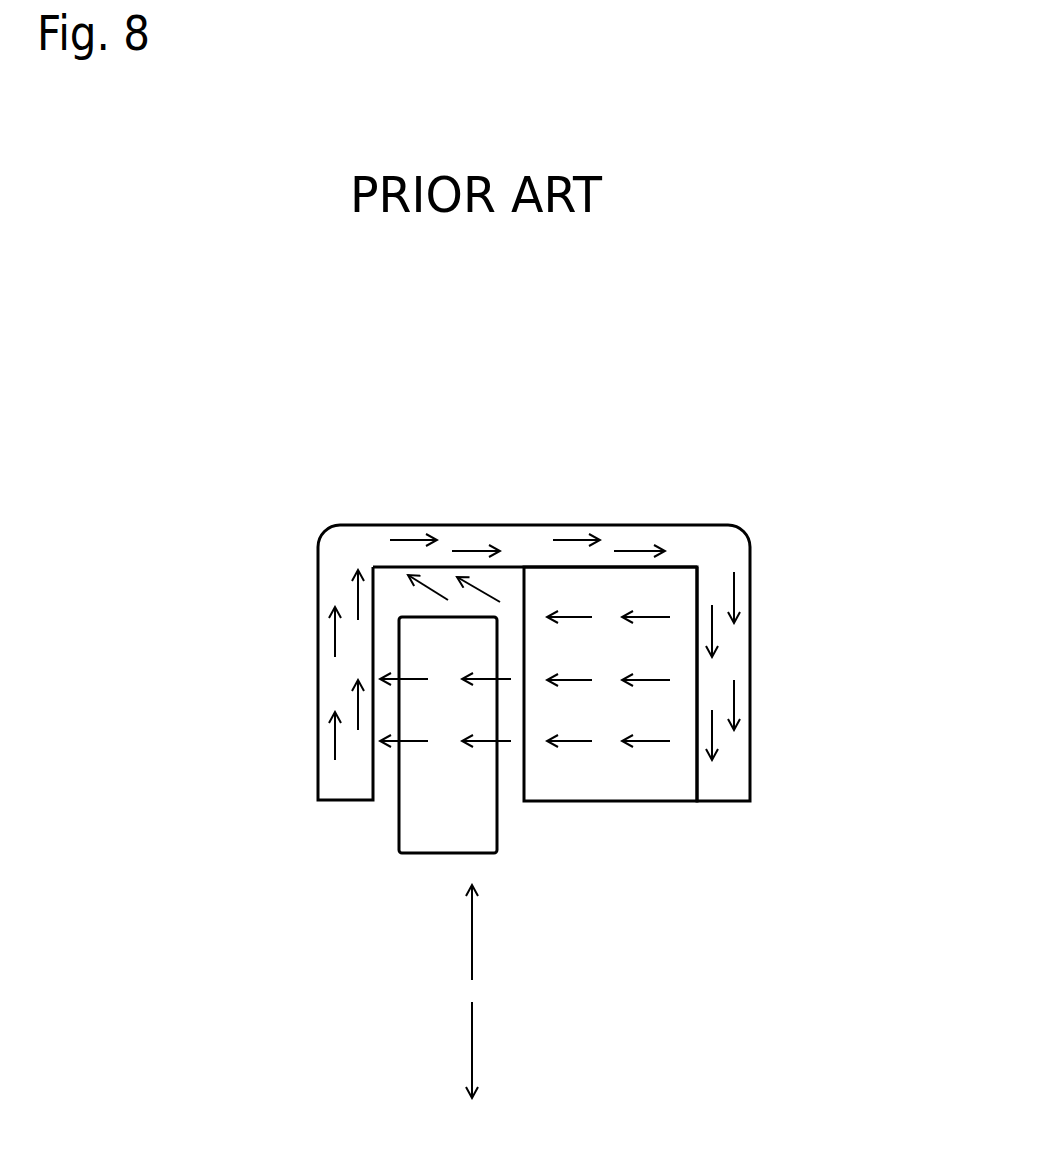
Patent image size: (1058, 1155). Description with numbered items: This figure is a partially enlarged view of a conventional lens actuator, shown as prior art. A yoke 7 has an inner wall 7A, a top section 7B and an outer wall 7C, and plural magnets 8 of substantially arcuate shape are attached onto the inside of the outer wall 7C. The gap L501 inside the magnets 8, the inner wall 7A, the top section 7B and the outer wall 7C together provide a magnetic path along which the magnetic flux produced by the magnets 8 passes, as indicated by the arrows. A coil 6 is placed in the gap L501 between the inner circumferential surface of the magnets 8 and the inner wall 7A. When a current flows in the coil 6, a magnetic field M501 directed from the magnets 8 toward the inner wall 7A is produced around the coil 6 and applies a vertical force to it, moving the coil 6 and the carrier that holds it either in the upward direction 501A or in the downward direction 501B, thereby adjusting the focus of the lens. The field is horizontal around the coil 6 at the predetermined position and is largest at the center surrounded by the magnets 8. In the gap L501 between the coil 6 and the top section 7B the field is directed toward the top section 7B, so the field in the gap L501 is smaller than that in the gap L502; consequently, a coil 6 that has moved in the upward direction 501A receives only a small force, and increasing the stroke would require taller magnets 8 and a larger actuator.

The coil 6 is at (426, 828).
The yoke 7 is at (548, 589).
The inner wall of yoke 7A is at (328, 700).
The top section of yoke 7B is at (472, 533).
The outer wall of yoke 7C is at (737, 763).
The magnet 8 is at (655, 792).
The gap L501 is at (403, 590).
The gap L502 is at (382, 748).
The magnetic field M501 is at (433, 600).
The upward direction 501A is at (472, 950).
The downward direction 501B is at (472, 1048).